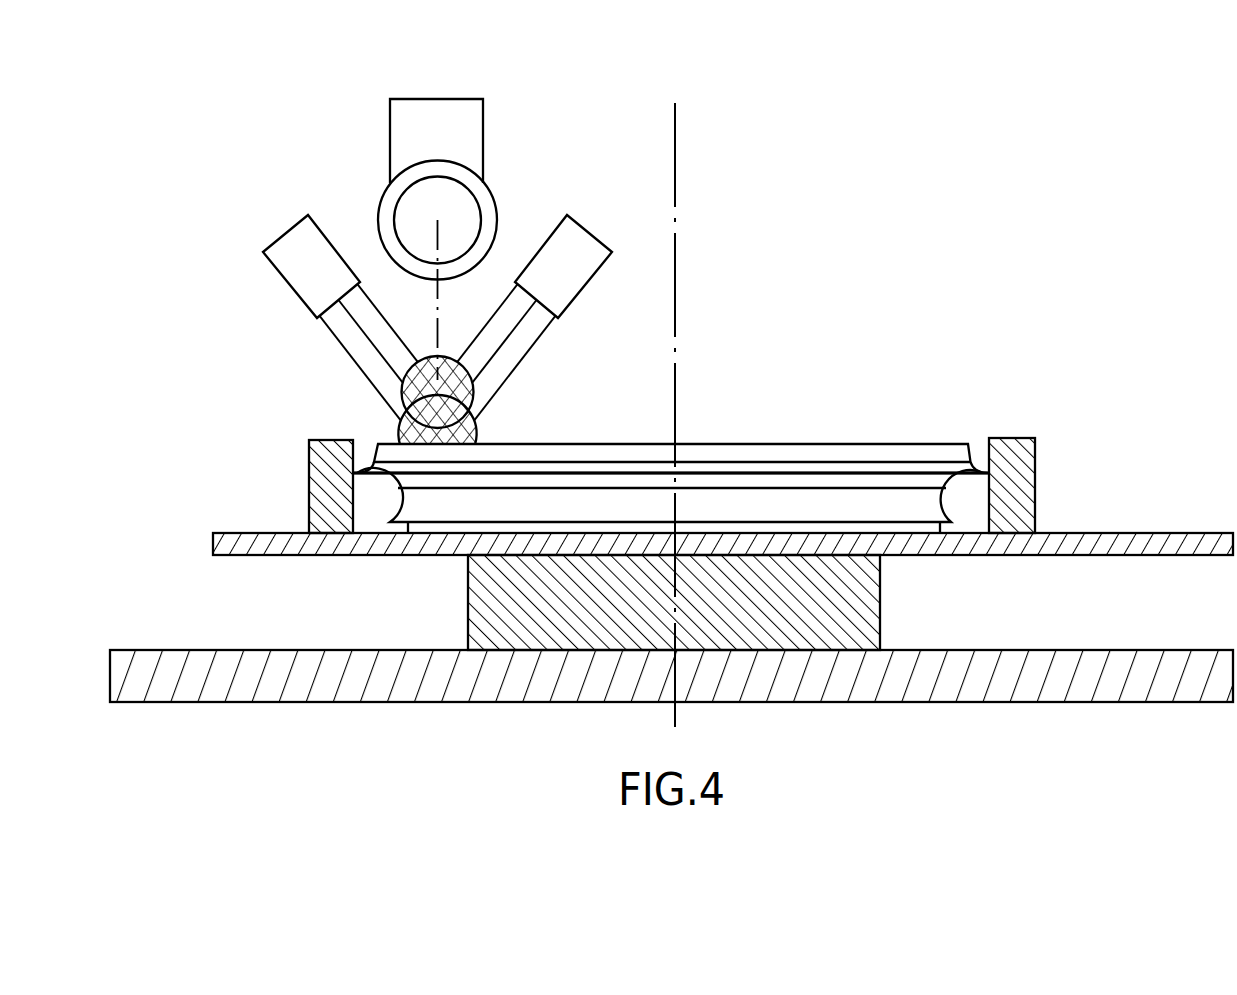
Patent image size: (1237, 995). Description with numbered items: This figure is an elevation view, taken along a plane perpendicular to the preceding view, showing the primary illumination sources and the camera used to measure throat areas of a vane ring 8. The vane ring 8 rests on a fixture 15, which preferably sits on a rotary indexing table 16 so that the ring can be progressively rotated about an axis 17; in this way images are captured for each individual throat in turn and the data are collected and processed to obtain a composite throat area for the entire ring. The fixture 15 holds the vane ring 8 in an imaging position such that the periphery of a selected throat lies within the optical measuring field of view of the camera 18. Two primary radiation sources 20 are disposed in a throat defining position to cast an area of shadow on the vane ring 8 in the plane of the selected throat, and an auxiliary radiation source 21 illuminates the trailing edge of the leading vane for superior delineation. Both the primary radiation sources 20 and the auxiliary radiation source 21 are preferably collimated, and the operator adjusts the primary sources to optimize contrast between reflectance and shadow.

The vane ring 8 is at (938, 444).
The fixture 15 is at (1052, 511).
The rotary indexing table 16 is at (870, 609).
The axis 17 is at (675, 168).
The camera 18 is at (485, 129).
The primary radiation sources 20 is at (283, 232).
The auxiliary radiation source 21 is at (460, 347).